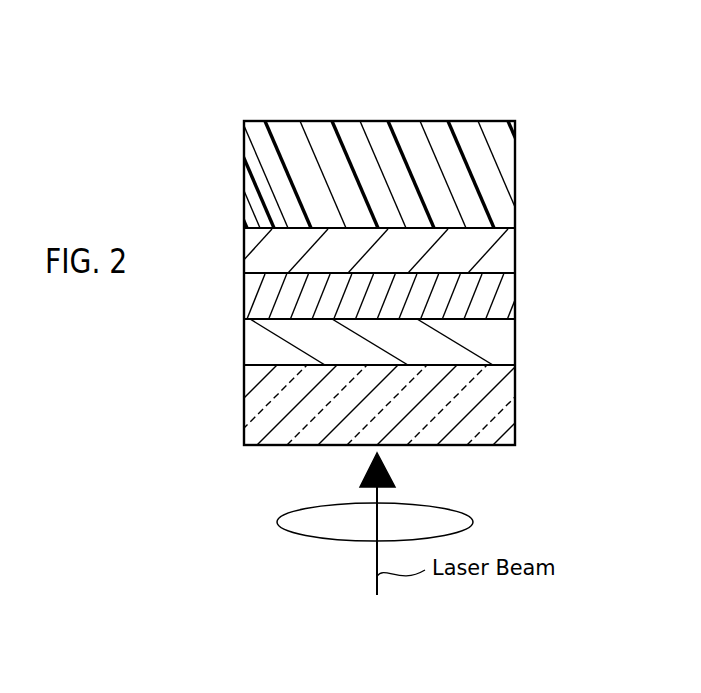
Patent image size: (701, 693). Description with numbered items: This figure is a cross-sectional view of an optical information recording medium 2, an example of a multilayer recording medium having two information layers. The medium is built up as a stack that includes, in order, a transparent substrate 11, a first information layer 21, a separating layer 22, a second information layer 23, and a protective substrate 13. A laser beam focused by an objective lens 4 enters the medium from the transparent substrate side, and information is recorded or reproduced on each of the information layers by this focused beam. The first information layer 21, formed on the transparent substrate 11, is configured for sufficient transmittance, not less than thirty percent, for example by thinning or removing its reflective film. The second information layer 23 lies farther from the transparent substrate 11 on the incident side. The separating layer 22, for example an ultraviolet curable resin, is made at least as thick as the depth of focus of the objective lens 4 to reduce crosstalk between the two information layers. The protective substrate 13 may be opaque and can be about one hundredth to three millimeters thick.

The optical information recording medium 2 is at (500, 108).
The protective substrate 13 is at (515, 178).
The second information layer 23 is at (515, 250).
The separating layer 22 is at (515, 295).
The first information layer 21 is at (515, 340).
The transparent substrate 11 is at (515, 403).
The objective lens 4 is at (473, 523).